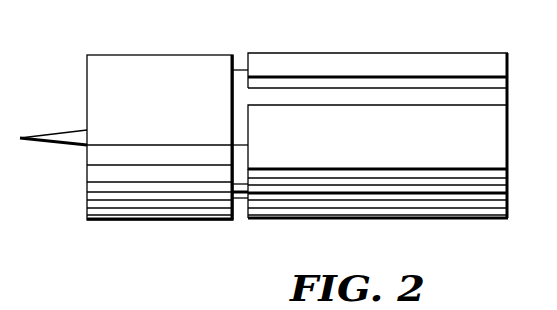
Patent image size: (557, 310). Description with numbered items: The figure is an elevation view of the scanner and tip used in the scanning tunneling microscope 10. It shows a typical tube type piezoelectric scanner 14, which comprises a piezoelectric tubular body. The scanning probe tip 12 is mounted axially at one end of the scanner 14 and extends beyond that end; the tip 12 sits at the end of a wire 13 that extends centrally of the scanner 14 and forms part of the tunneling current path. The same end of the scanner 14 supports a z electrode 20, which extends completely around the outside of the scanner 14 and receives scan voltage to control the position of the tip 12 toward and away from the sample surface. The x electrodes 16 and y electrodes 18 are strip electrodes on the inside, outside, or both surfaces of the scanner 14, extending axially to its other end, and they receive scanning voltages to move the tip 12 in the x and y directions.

The scanning tunneling microscope 10 is at (172, 220).
The scanning probe tip 12 is at (57, 141).
The wire 13 is at (86, 128).
The tubular piezoelectric scanner 14 is at (240, 70).
The x electrodes 16 is at (497, 58).
The y electrodes 18 is at (492, 133).
The z electrode 20 is at (88, 72).